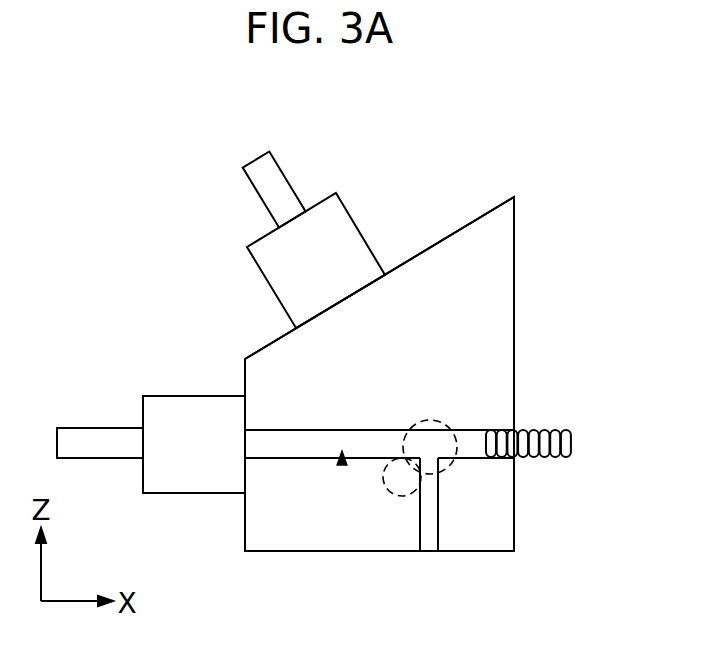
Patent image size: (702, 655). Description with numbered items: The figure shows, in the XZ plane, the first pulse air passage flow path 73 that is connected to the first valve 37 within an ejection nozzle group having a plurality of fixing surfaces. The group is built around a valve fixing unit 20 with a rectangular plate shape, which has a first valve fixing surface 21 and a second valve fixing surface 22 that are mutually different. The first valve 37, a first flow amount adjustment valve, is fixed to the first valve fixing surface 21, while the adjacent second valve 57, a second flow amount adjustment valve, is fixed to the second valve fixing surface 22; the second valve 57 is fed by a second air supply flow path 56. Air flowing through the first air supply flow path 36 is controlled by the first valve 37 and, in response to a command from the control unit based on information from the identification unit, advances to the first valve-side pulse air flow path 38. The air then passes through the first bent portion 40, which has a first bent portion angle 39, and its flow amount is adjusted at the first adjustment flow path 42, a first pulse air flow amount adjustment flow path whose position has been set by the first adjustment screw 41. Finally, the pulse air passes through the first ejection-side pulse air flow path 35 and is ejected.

The valve fixing unit 20 is at (500, 268).
The first valve fixing surface 21 is at (243, 527).
The second valve fixing surface 22 is at (493, 207).
The first ejection-side pulse air flow path 35 is at (430, 537).
The first air supply flow path 36 is at (102, 442).
The first valve 37 is at (187, 412).
The first valve-side pulse air flow path 38 is at (317, 443).
The first bent portion angle 39 is at (399, 483).
The first bent portion 40 is at (433, 420).
The first adjustment screw 41 is at (553, 430).
The first adjustment flow path 42 is at (472, 442).
The second air supply flow path 56 is at (279, 190).
The second valve 57 is at (337, 235).
The first pulse air passage flow path 73 is at (342, 464).